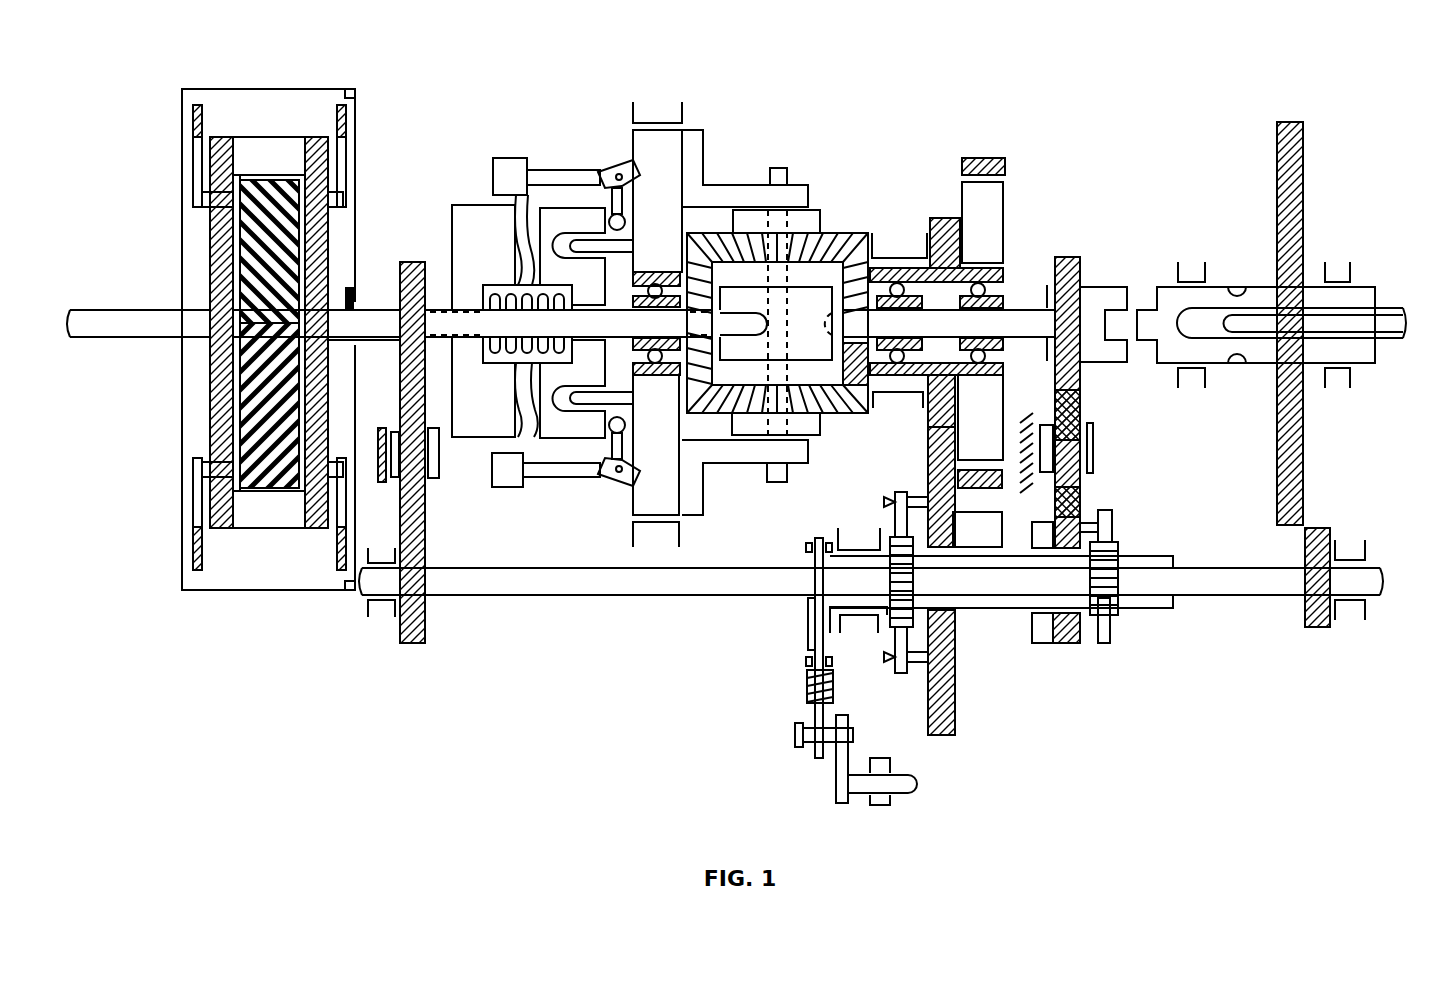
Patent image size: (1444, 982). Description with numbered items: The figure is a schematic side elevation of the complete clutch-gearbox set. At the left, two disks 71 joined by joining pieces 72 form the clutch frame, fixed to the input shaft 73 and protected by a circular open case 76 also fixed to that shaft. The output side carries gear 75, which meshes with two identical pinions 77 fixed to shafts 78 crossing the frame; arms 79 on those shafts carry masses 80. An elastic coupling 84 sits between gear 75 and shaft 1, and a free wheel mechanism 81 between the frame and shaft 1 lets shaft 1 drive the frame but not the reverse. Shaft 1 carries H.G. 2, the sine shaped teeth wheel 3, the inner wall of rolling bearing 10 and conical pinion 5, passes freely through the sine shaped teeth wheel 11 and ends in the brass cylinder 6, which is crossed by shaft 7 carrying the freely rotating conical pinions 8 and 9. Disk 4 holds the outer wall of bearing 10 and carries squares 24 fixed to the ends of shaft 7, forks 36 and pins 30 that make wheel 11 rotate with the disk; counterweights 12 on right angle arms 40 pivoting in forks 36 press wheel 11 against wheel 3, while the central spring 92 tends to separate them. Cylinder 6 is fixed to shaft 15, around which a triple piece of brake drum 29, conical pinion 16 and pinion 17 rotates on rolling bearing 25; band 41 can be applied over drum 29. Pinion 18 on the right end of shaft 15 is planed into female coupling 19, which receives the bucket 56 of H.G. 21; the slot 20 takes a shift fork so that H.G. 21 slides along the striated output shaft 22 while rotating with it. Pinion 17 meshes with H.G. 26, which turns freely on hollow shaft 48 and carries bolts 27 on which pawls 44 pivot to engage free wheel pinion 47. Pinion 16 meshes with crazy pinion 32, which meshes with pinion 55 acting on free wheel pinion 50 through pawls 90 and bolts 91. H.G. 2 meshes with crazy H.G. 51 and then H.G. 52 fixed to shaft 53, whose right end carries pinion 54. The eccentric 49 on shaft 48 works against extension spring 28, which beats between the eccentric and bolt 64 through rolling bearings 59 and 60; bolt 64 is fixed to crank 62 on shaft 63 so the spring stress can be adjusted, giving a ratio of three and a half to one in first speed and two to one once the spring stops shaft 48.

The input shaft 1 is at (500, 323).
The H.G. 2 is at (410, 265).
The sine shaped teeth wheel 3 is at (455, 228).
The disk 4 is at (642, 160).
The conical pinion 5 is at (714, 276).
The brass cylinder 6 is at (798, 290).
The shaft 7 is at (780, 168).
The conical pinion 8 is at (832, 238).
The conical pinion 9 is at (826, 413).
The rolling bearing 10 is at (645, 301).
The sine shaped teeth wheel 11 is at (590, 223).
The counterweights 12 is at (502, 158).
The shaft 15 is at (940, 323).
The conical pinion 16 is at (852, 392).
The pinion 17 is at (940, 223).
The pinion 18 is at (1068, 260).
The female coupling 19 is at (1094, 298).
The slot 20 is at (1237, 281).
The H.G. 21 is at (1277, 148).
The output shaft 22 is at (1400, 313).
The squares 24 is at (725, 185).
The rolling bearing 25 is at (915, 299).
The H.G. 26 is at (935, 490).
The bolts 27 is at (884, 500).
The extension spring 28 is at (807, 688).
The brake drum 29 is at (1000, 206).
The pins 30 is at (612, 248).
The crazy pinion 32 is at (1080, 408).
The forks 36 is at (607, 168).
The right angle arms 40 is at (556, 170).
The band 41 is at (975, 158).
The pawls 44 is at (895, 494).
The free wheel pinion 47 is at (890, 610).
The hollow shaft 48 is at (1175, 558).
The eccentric 49 is at (808, 626).
The free wheel pinion 50 is at (1118, 550).
The crazy H.G. 51 is at (415, 516).
The H.G. 52 is at (425, 632).
The shaft 53 is at (528, 595).
The pinion 54 is at (1305, 606).
The pinion 55 is at (1088, 522).
The bucket 56 is at (1213, 368).
The rolling bearing 59 is at (805, 743).
The rolling bearing 60 is at (806, 545).
The crank 62 is at (838, 763).
The shaft 63 is at (905, 780).
The bolt 64 is at (795, 734).
The disks 71 is at (210, 255).
The joining pieces 72 is at (380, 438).
The input shaft 73 is at (138, 323).
The gear 75 is at (299, 376).
The circular open case 76 is at (275, 89).
The pinions 77 is at (330, 226).
The shafts 78 is at (215, 200).
The arms 79 is at (193, 160).
The masses 80 is at (198, 105).
The free wheel mechanism 81 is at (340, 310).
The elastic coupling 84 is at (237, 297).
The pawls 90 is at (1112, 518).
The bolts 91 is at (1045, 645).
The central spring 92 is at (505, 352).